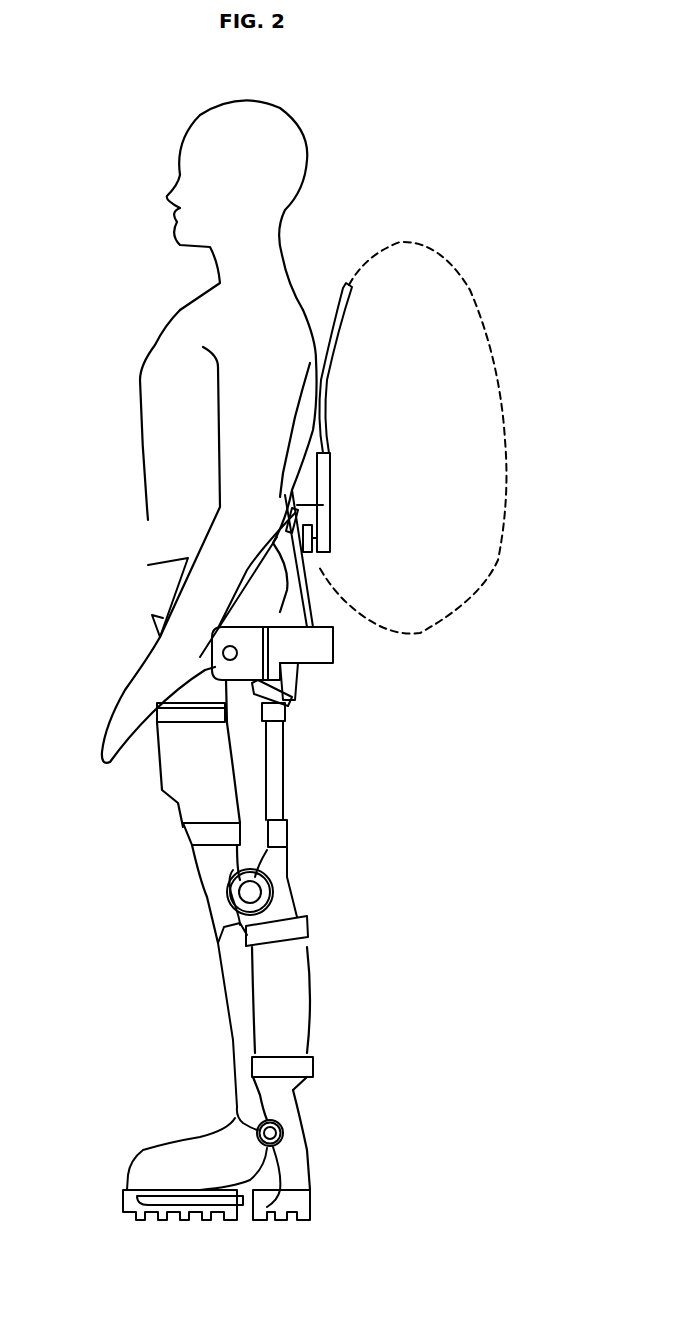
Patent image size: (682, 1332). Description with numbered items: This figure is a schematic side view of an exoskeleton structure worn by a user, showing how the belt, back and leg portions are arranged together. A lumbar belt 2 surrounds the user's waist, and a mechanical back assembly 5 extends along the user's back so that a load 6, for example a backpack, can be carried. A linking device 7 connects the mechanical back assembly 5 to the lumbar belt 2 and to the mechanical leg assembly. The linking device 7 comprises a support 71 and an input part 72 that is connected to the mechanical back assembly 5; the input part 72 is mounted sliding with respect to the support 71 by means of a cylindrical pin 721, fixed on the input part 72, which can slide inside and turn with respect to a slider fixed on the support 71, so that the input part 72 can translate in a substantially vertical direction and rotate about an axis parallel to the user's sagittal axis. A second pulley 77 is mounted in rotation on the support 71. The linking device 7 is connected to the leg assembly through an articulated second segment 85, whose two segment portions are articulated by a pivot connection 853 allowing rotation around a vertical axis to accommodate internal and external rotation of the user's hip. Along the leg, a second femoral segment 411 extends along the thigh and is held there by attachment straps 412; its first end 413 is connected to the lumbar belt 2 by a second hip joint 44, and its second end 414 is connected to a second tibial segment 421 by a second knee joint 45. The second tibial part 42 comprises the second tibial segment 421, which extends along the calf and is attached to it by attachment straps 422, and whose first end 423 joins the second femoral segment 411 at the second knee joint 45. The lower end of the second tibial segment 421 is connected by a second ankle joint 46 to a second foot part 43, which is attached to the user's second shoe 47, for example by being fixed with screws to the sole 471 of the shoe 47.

The lumbar belt 2 is at (150, 598).
The mechanical back assembly 5 is at (331, 518).
The load 6 is at (482, 325).
The linking device 7 is at (316, 562).
The support 71 is at (290, 560).
The input part 72 is at (314, 559).
The cylindrical pin 721 is at (313, 552).
The second pulley 77 is at (290, 520).
The second segment 85 is at (308, 647).
The pivot connection 853 is at (267, 650).
The second hip joint 44 is at (225, 654).
The second femoral segment 411 is at (250, 756).
The attachment straps 412 is at (280, 710).
The first end 413 is at (215, 668).
The second end 414 is at (248, 855).
The second knee joint 45 is at (252, 892).
The second tibial part 42 is at (220, 998).
The second tibial segment 421 is at (235, 1040).
The attachment straps 422 is at (296, 925).
The first end 423 is at (242, 926).
The second ankle joint 46 is at (273, 1133).
The second shoe 47 is at (152, 1155).
The sole 471 is at (135, 1200).
The second foot part 43 is at (245, 1198).